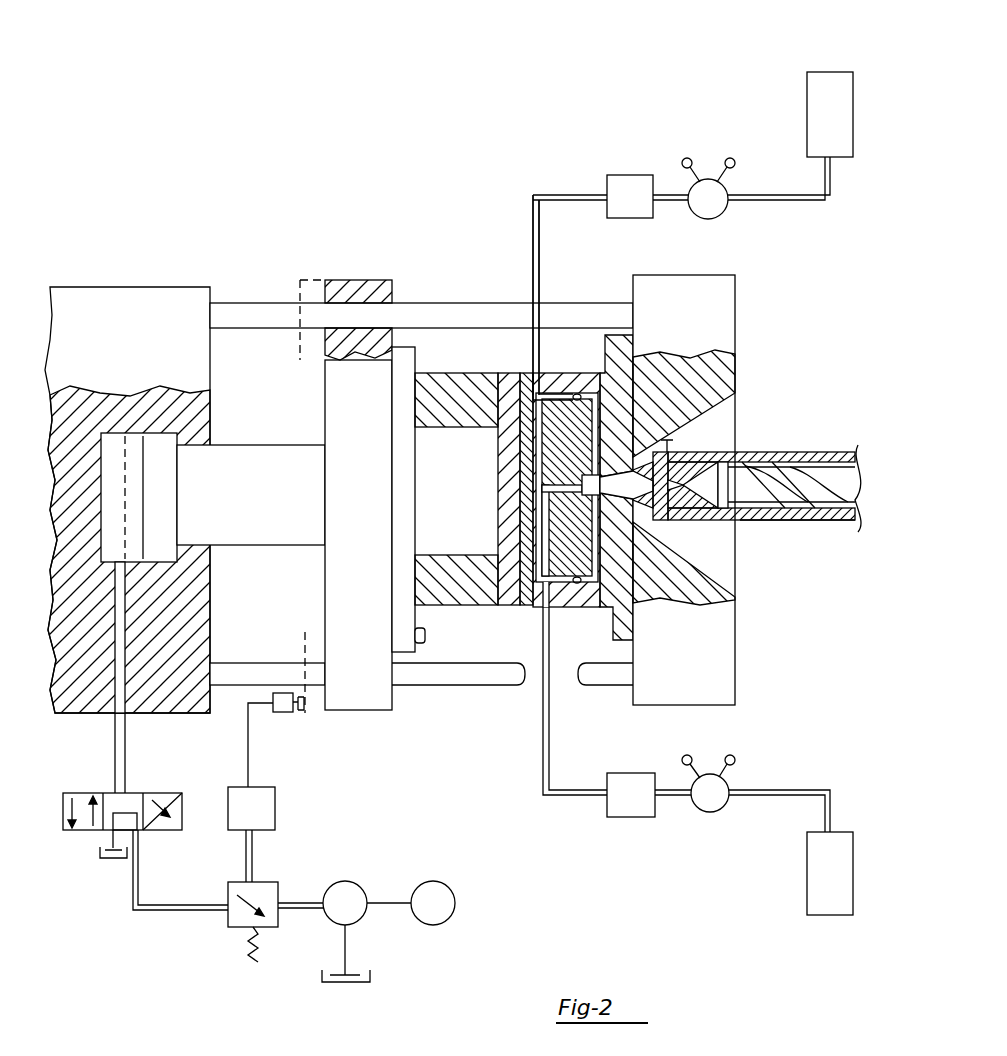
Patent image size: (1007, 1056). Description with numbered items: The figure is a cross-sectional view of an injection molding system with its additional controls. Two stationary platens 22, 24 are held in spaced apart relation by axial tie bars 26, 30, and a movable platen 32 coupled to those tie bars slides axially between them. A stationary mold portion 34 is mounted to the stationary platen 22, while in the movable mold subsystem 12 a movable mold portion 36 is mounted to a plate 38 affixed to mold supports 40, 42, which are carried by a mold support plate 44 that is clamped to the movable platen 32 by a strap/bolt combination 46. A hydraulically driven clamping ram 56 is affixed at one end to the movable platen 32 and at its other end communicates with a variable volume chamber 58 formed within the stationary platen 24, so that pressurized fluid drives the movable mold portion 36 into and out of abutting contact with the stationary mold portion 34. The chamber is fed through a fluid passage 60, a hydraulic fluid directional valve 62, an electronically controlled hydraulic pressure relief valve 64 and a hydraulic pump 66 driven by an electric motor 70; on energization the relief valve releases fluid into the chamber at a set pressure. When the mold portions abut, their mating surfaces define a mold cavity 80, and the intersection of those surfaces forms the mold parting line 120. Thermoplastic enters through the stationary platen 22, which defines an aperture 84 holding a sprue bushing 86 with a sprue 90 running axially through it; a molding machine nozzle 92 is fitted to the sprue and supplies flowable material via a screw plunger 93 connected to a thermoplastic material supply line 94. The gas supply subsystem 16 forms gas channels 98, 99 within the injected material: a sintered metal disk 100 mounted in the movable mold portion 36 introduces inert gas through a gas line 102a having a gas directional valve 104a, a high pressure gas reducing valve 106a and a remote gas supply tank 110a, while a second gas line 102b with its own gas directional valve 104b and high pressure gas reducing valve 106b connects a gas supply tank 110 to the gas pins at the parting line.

The movable mold subsystem 12 is at (272, 268).
The gas supply subsystem 16 is at (642, 68).
The stationary platen 22 is at (720, 310).
The stationary platen 24 is at (140, 308).
The axial tie bar 26 is at (462, 305).
The axial tie bar 30 is at (268, 675).
The movable platen 32 is at (372, 287).
The stationary mold portion 34 is at (572, 607).
The movable mold portion 36 is at (532, 608).
The plate 38 is at (512, 386).
The mold support 40 is at (466, 386).
The mold support 42 is at (468, 560).
The mold support plate 44 is at (417, 330).
The strap/bolt combination 46 is at (404, 645).
The hydraulically driven clamping ram 56 is at (282, 457).
The variable volume chamber 58 is at (107, 483).
The fluid passage 60 is at (118, 687).
The hydraulic fluid directional valve 62 is at (63, 818).
The electronically controlled hydraulic pressure relief valve 64 is at (233, 925).
The hydraulic pump 66 is at (335, 920).
The electric motor 70 is at (449, 917).
The mold cavity 80 is at (640, 590).
The aperture 84 is at (737, 452).
The sprue bushing 86 is at (640, 535).
The sprue 90 is at (655, 520).
The molding machine nozzle 92 is at (812, 520).
The screw plunger 93 is at (805, 480).
The thermoplastic material supply line 94 is at (860, 482).
The gas channel 98 is at (578, 393).
The gas channel 99 is at (574, 585).
The sintered metal disk 100 is at (582, 485).
The gas line 102a is at (543, 770).
The gas line 102b is at (543, 200).
The gas directional valve 104a is at (610, 803).
The gas directional valve 104b is at (620, 180).
The high pressure gas reducing valve 106a is at (698, 805).
The high pressure gas reducing valve 106b is at (708, 180).
The upper coolant reservoir 110 is at (813, 88).
The remote gas supply tank 110a is at (818, 888).
The mold parting line 120 is at (574, 395).